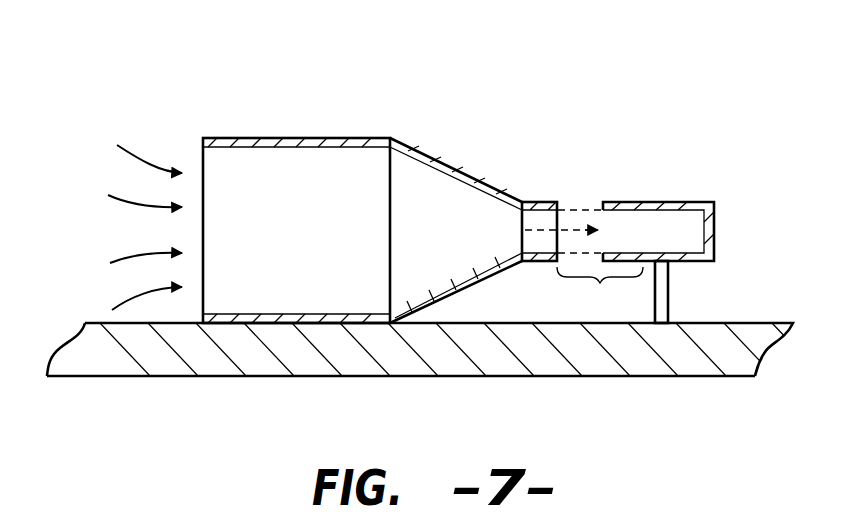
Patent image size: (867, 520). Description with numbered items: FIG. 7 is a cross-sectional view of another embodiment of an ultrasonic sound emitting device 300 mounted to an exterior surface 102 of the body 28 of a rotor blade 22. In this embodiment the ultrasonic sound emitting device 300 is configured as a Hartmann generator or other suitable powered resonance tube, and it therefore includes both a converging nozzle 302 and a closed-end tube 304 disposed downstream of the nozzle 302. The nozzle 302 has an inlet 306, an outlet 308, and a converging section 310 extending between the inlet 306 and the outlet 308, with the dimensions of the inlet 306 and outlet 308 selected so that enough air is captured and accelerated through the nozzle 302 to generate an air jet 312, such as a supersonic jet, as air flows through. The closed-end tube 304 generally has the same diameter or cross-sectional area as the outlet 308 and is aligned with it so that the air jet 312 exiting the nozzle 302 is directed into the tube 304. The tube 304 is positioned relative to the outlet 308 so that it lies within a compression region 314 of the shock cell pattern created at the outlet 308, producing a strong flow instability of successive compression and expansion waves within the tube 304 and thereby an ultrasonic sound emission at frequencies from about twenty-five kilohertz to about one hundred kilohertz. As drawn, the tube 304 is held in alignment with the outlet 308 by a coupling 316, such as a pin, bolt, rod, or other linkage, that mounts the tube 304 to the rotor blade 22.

The ultrasonic sound emitting device 300 is at (573, 91).
The converging nozzle 302 is at (288, 138).
The closed-end tube 304 is at (683, 202).
The inlet 306 is at (203, 160).
The outlet 308 is at (557, 203).
The converging section 310 is at (400, 128).
The air jet 312 is at (590, 210).
The compression region 314 is at (600, 292).
The coupling 316 is at (670, 282).
The exterior surface 102 is at (434, 355).
The rotor blade 22 is at (655, 380).
The body 28 is at (730, 356).